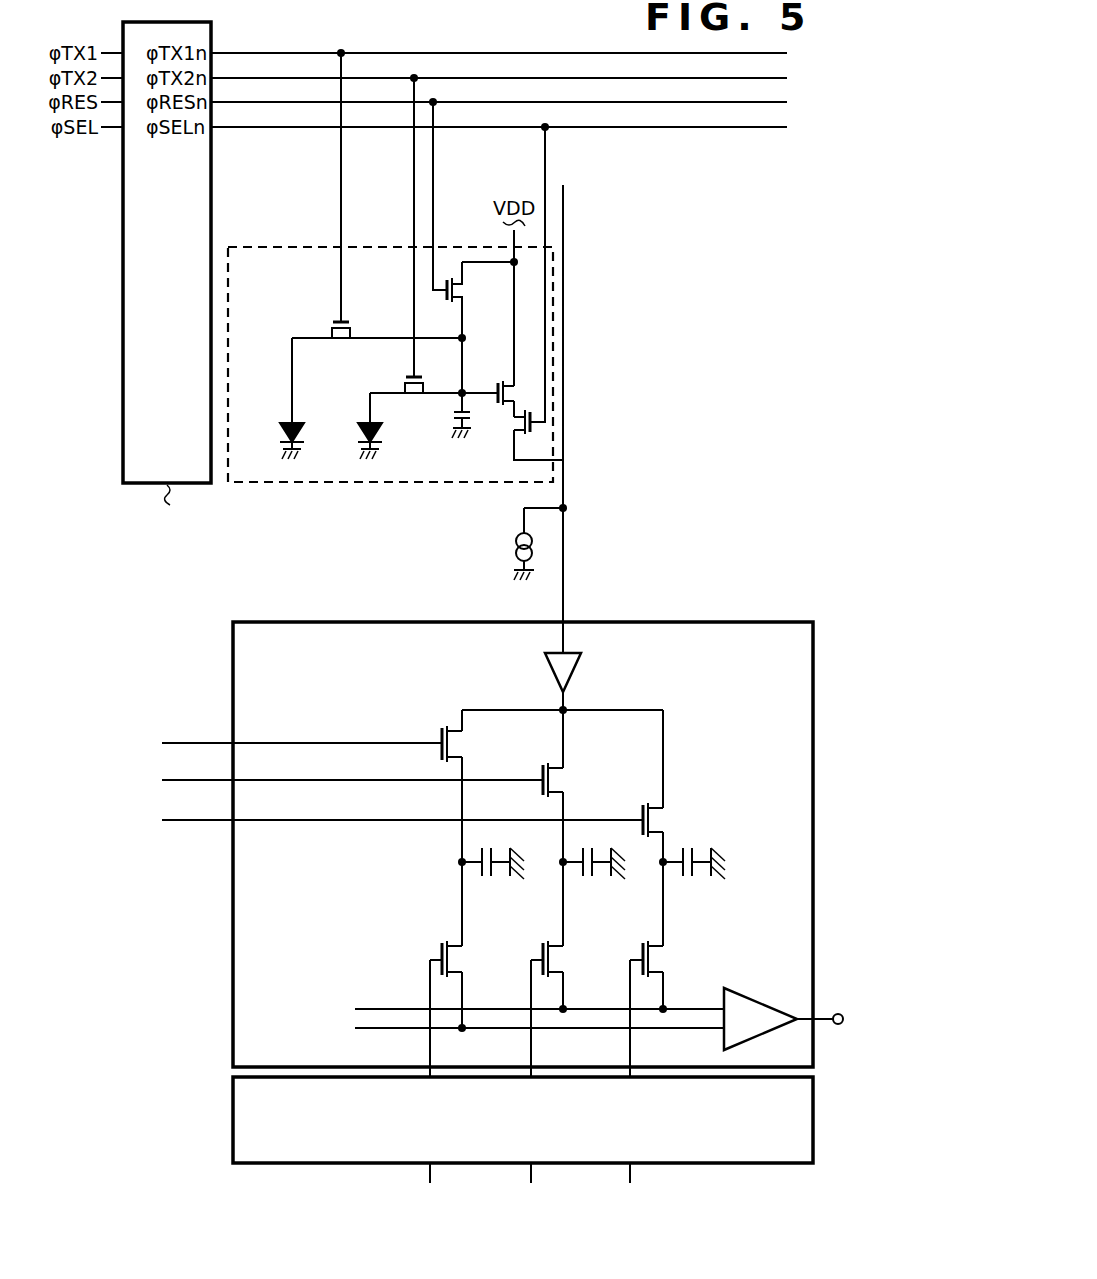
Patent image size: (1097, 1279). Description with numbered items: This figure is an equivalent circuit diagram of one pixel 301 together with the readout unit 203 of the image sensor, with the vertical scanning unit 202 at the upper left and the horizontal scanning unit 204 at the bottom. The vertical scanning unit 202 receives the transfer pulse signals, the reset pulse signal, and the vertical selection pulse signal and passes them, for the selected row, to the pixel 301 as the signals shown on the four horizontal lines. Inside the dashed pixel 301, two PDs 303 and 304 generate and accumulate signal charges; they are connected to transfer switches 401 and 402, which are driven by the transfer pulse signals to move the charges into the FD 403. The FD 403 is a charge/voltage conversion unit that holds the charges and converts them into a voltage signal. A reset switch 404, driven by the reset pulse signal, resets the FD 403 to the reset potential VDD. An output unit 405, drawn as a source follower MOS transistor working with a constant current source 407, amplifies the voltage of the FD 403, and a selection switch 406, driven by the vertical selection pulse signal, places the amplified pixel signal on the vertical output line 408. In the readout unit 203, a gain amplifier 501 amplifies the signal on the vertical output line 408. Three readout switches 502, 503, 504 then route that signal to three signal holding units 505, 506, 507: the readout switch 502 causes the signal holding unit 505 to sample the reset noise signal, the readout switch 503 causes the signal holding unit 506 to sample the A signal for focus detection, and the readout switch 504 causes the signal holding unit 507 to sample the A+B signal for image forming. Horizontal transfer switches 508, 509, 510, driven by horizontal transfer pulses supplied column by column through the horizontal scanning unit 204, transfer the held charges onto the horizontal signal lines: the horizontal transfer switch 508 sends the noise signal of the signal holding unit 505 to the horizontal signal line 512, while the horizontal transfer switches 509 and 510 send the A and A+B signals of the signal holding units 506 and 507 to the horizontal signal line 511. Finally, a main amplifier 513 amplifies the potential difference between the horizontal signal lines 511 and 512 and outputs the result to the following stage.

The vertical scanning unit 202 is at (147, 217).
The readout unit 203 is at (233, 678).
The horizontal scanning unit 204 is at (233, 1116).
The pixel 301 is at (291, 247).
The PD 303 is at (282, 430).
The PD 304 is at (359, 430).
The transfer switch 401 is at (340, 332).
The transfer switch 402 is at (414, 390).
The FD 403 is at (452, 418).
The reset switch 404 is at (462, 292).
The output unit 405 is at (502, 380).
The selection switch 406 is at (522, 428).
The constant current source 407 is at (513, 550).
The vertical output line 408 is at (565, 236).
The gain amplifier 501 is at (546, 668).
The readout switch 502 is at (455, 743).
The readout switch 503 is at (557, 780).
The readout switch 504 is at (657, 808).
The signal holding unit 505 is at (486, 880).
The signal holding unit 506 is at (587, 880).
The signal holding unit 507 is at (687, 880).
The horizontal transfer switch 508 is at (455, 960).
The horizontal transfer switch 509 is at (556, 960).
The horizontal transfer switch 510 is at (656, 960).
The horizontal signal line 511 is at (362, 1008).
The horizontal signal line 512 is at (357, 1029).
The main amplifier 513 is at (755, 1008).